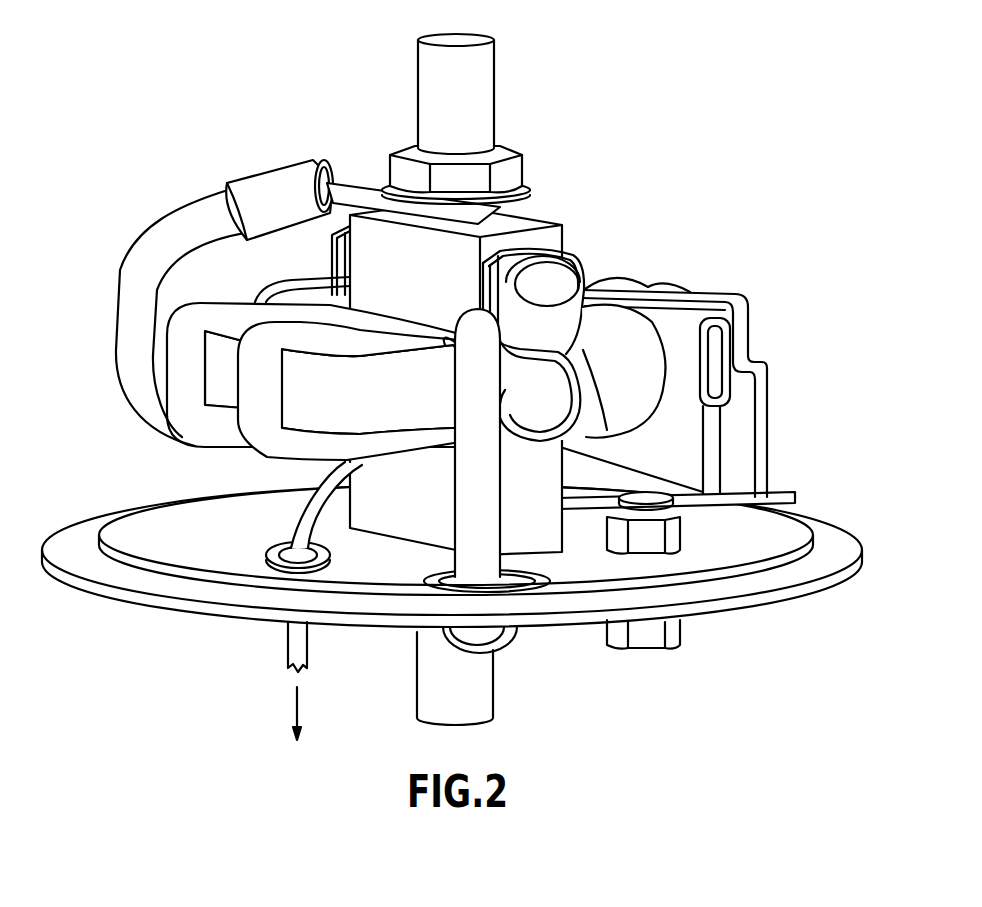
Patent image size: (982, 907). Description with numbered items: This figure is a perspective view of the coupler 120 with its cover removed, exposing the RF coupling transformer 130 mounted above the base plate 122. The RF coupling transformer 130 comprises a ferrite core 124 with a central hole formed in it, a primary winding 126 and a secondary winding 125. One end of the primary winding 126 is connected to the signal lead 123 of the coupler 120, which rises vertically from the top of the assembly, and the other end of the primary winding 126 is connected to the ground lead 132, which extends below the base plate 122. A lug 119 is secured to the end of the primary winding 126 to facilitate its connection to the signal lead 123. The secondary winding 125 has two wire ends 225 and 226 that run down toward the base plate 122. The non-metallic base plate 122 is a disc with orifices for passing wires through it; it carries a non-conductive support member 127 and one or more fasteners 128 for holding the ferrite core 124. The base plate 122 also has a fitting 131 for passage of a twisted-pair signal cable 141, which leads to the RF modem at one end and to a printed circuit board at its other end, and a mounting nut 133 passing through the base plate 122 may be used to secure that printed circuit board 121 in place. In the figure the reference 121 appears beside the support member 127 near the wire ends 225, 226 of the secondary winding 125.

The lug 119 is at (377, 194).
The coupler 120 is at (194, 138).
The housing body 121 is at (690, 429).
The base plate 122 is at (72, 544).
The signal lead 123 is at (487, 89).
The ferrite core 124 is at (303, 407).
The secondary winding 125 is at (670, 292).
The primary winding 126 is at (120, 333).
The support member 127 is at (535, 230).
The fastener 128 is at (648, 397).
The RF coupling transformer 130 is at (633, 262).
The fitting 131 is at (267, 559).
The ground lead 132 is at (485, 688).
The mounting nut 133 is at (643, 640).
The twisted-pair signal cable 141 is at (288, 639).
The wire end 225 is at (760, 428).
The wire end 226 is at (703, 490).